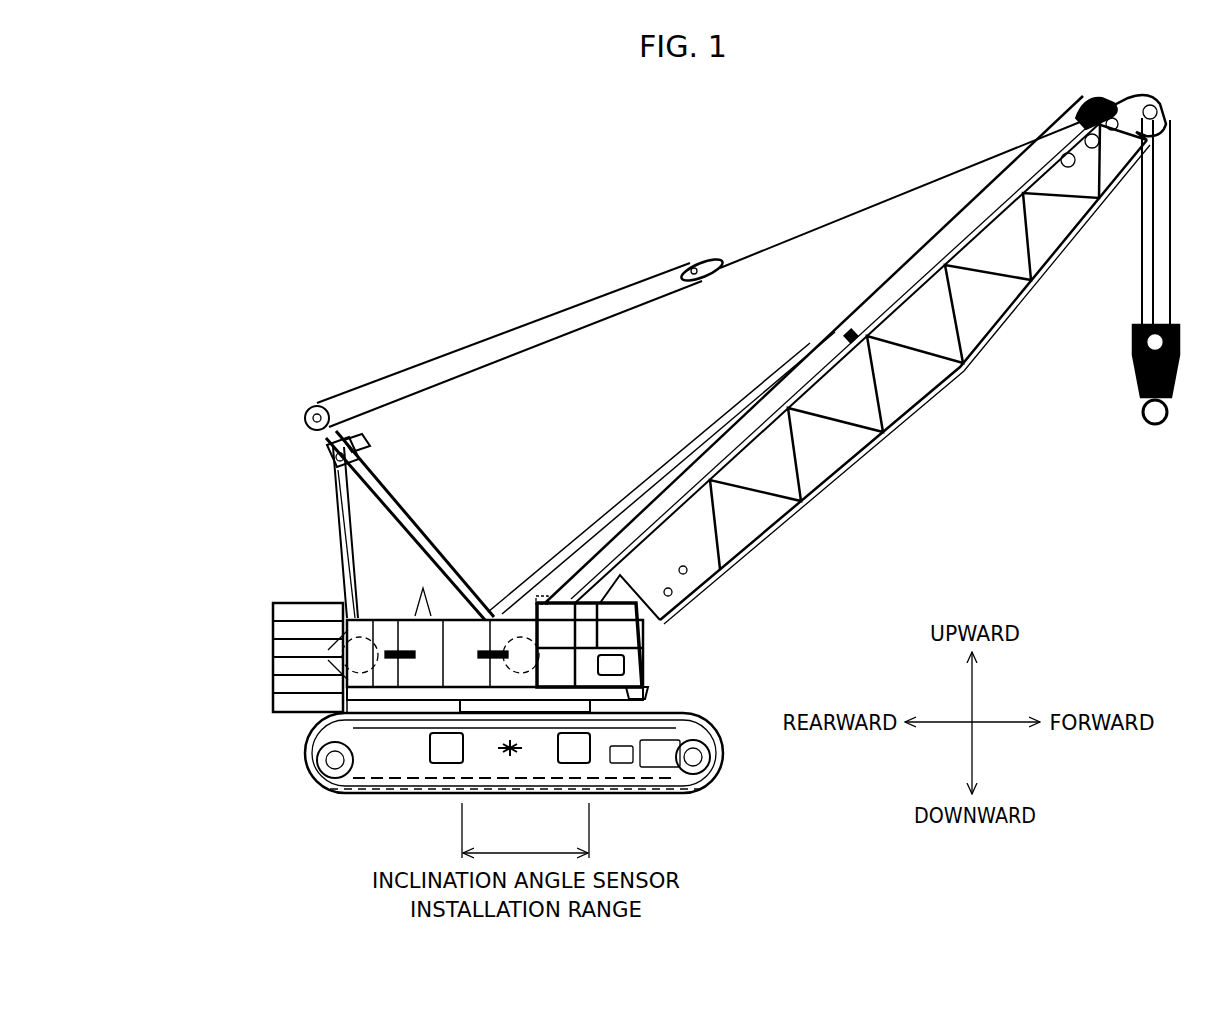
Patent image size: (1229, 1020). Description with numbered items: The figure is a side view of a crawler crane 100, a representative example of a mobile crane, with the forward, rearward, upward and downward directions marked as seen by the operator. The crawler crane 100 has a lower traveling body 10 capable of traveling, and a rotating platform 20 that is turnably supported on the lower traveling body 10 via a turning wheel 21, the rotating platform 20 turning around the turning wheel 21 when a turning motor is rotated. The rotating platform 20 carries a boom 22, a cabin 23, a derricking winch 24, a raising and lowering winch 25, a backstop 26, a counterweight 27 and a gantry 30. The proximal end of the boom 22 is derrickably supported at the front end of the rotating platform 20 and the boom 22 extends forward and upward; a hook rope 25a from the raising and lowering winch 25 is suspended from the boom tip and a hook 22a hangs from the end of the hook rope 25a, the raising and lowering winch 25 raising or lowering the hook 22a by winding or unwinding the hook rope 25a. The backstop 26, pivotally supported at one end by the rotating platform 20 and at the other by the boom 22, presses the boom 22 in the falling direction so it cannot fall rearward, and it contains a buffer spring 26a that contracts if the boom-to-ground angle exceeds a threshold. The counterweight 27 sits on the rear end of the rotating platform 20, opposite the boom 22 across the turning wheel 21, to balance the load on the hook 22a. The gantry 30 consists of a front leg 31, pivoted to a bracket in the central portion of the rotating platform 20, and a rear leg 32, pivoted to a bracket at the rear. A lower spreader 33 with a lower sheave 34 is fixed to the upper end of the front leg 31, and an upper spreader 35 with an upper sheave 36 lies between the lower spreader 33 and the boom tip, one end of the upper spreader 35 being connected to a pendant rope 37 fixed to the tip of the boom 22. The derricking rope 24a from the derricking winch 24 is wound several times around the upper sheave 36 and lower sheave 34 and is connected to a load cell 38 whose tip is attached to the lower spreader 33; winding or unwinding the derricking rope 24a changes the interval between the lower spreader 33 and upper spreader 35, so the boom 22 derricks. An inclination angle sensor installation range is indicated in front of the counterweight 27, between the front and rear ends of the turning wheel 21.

The crawler crane 100 is at (478, 178).
The lower traveling body 10 is at (668, 790).
The rotating platform 20 is at (645, 693).
The turning wheel 21 is at (600, 706).
The boom 22 is at (852, 460).
The hook 22a is at (1142, 410).
The cabin 23 is at (598, 600).
The derricking winch 24 is at (336, 642).
The derricking rope 24a is at (494, 332).
The raising and lowering winch 25 is at (543, 598).
The hook rope 25a is at (843, 335).
The backstop 26 is at (633, 500).
The buffer spring 26a is at (585, 540).
The counterweight 27 is at (272, 664).
The gantry 30 is at (276, 445).
The front leg 31 is at (420, 530).
The rear leg 32 is at (333, 535).
The lower spreader 33 is at (358, 450).
The lower sheave 34 is at (306, 406).
The upper spreader 35 is at (705, 247).
The upper sheave 36 is at (683, 266).
The pendant rope 37 is at (855, 212).
The load cell 38 is at (335, 468).